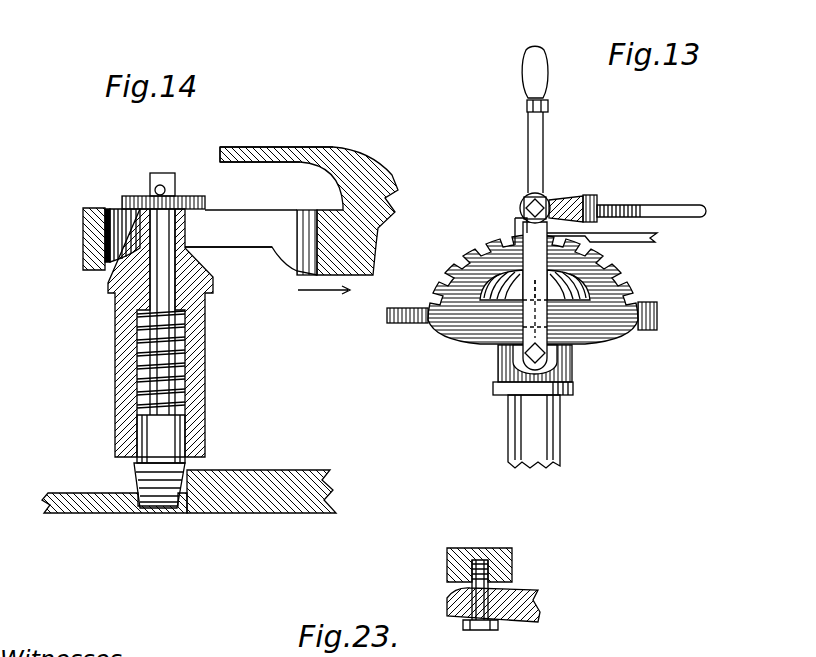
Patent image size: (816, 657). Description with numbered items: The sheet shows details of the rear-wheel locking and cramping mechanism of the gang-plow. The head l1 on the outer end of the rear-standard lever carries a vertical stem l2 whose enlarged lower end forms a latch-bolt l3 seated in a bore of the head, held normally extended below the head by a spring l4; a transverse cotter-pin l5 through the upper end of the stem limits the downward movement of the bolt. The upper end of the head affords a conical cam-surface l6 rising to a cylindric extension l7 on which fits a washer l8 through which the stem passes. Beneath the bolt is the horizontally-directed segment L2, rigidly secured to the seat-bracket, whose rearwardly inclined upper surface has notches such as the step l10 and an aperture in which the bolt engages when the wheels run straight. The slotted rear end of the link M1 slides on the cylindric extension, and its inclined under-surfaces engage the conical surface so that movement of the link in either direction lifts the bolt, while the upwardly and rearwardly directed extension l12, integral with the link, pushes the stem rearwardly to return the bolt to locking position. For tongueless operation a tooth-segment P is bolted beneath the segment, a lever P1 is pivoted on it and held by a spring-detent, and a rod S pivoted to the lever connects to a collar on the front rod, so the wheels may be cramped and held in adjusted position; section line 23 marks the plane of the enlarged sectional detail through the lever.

In FIG. 14, the head l1 is at (205, 345).
In FIG. 13, the head l1 is at (525, 290).
In FIG. 14, the vertical stem l2 is at (176, 191).
In FIG. 14, the latch-bolt l3 is at (182, 435).
In FIG. 14, the spring l4 is at (140, 367).
In FIG. 14, the transverse cotter-pin l5 is at (162, 185).
In FIG. 14, the conical cam-surface l6 is at (108, 283).
In FIG. 14, the cylindric extension l7 is at (188, 238).
In FIG. 14, the washer l8 is at (122, 198).
In FIG. 14, the notch or step l10 is at (205, 470).
In FIG. 14, the extension l12 is at (262, 147).
In FIG. 14, the segment L2 is at (280, 515).
In FIG. 13, the segment L2 is at (657, 327).
In FIG. 14, the link M1 is at (367, 250).
In FIG. 13, the link M1 is at (657, 237).
In FIG. 13, the tooth-segment P is at (522, 289).
In FIG. 13, the lever P1 is at (540, 166).
In FIG. 23, the lever P1 is at (503, 552).
In FIG. 13, the rod S is at (645, 203).
In FIG. 23, the rod S is at (533, 610).
In FIG. 13, the section line 23 is at (496, 210).